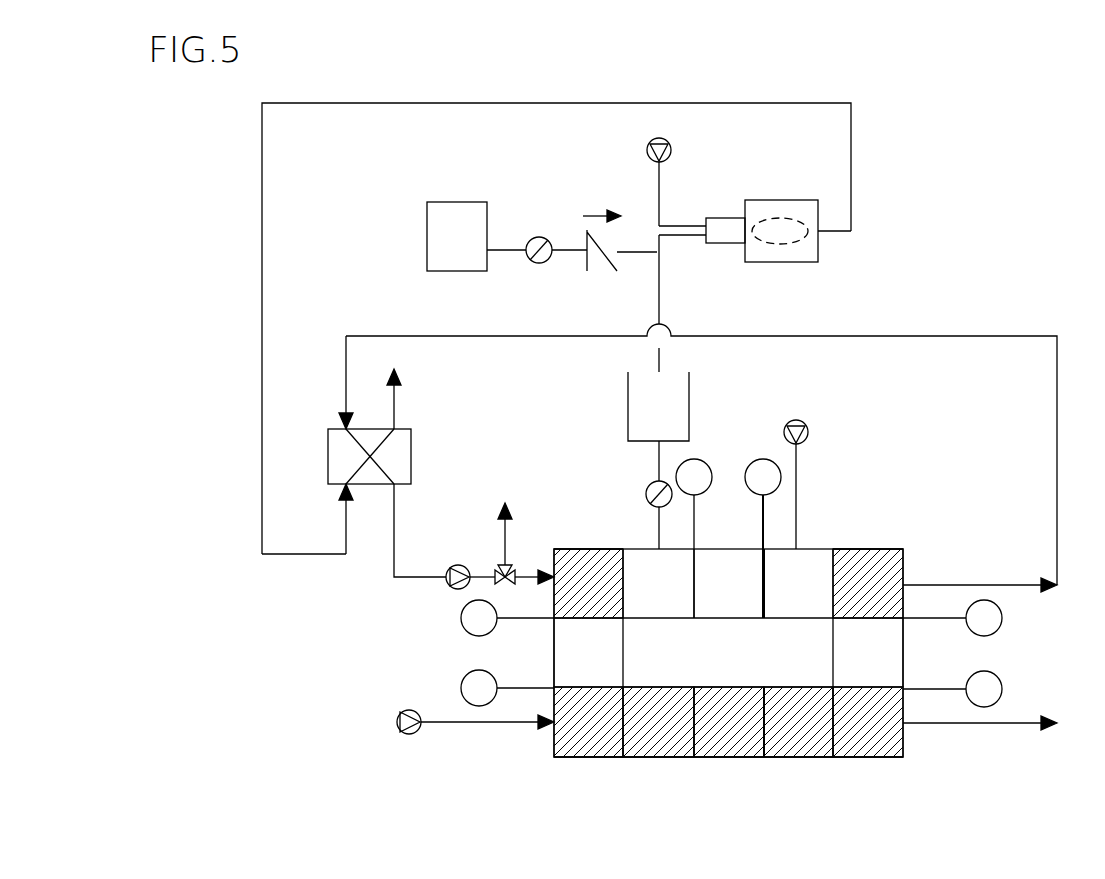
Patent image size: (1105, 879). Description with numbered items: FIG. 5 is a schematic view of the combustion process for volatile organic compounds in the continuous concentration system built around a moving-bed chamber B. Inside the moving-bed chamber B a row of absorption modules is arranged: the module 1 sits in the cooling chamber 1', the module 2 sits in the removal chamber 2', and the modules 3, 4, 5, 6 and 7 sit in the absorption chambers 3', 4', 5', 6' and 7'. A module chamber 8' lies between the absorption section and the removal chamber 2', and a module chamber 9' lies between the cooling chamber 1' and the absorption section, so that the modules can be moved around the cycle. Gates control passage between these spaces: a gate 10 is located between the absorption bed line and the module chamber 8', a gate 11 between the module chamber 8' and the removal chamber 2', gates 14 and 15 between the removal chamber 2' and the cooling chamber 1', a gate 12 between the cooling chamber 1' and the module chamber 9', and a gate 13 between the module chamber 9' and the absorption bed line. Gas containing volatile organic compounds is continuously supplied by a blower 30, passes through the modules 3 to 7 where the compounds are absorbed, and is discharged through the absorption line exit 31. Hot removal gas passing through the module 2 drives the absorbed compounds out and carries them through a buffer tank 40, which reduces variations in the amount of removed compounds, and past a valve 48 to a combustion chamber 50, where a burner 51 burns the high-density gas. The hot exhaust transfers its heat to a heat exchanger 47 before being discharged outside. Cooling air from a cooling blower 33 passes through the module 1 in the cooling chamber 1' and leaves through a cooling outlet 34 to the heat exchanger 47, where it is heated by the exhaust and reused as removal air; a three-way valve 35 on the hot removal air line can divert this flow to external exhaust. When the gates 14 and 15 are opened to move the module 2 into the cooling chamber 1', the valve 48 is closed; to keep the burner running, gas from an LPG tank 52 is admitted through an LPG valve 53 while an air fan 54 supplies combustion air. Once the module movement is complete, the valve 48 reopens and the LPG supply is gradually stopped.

The moving-bed chamber B is at (538, 765).
The module 1 is at (868, 583).
The module 2 is at (588, 583).
The module 3 is at (588, 722).
The module 4 is at (658, 722).
The module 5 is at (729, 722).
The module 6 is at (798, 722).
The module 7 is at (868, 722).
The cooling chamber 1' is at (868, 527).
The removal chamber 2' is at (588, 529).
The absorption chamber 3' is at (588, 782).
The absorption chamber 4' is at (658, 782).
The absorption chamber 5' is at (729, 782).
The absorption chamber 6' is at (798, 782).
The absorption chamber 7' is at (868, 782).
The module chamber 8' is at (535, 652).
The module chamber 9' is at (923, 652).
The gate 10 is at (507, 688).
The gate 11 is at (507, 618).
The gate 12 is at (952, 618).
The gate 13 is at (952, 689).
The gate 14 is at (694, 538).
The gate 15 is at (763, 538).
The blower 30 is at (410, 710).
The absorption line exit 31 is at (994, 724).
The cooling blower 33 is at (808, 432).
The cooling outlet 34 is at (994, 586).
The three-way valve 35 is at (508, 572).
The buffer tank 40 is at (658, 338).
The heat exchanger 47 is at (354, 456).
The valve 48 is at (647, 490).
The combustion chamber 50 is at (790, 200).
The burner 51 is at (722, 243).
The LPG tank 52 is at (476, 236).
The LPG valve 53 is at (536, 262).
The air fan 54 is at (649, 142).